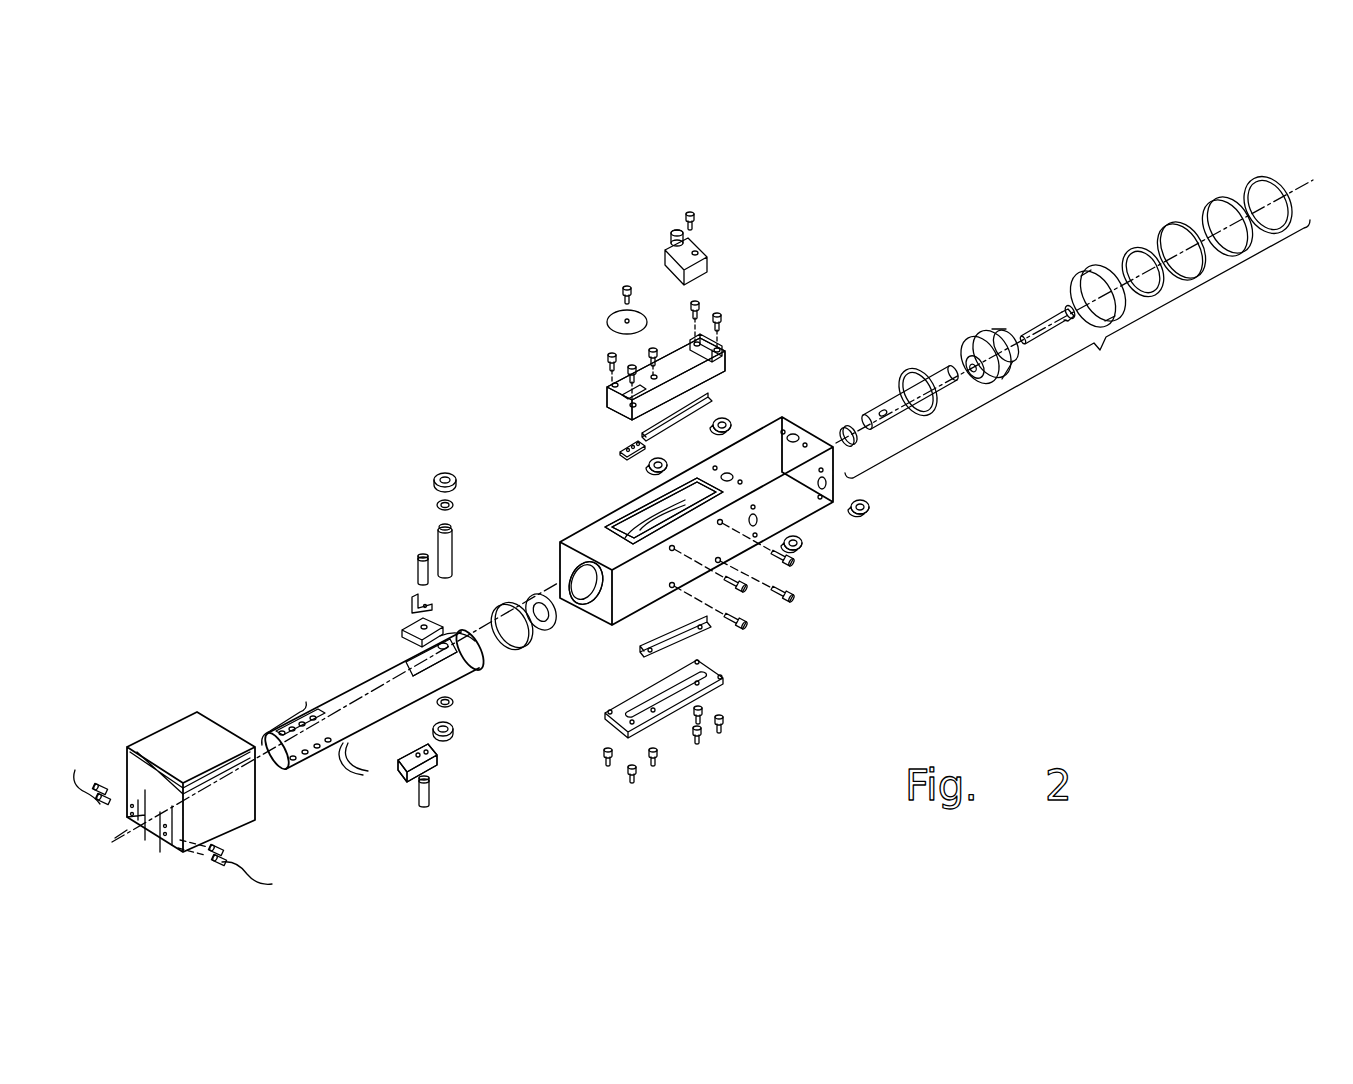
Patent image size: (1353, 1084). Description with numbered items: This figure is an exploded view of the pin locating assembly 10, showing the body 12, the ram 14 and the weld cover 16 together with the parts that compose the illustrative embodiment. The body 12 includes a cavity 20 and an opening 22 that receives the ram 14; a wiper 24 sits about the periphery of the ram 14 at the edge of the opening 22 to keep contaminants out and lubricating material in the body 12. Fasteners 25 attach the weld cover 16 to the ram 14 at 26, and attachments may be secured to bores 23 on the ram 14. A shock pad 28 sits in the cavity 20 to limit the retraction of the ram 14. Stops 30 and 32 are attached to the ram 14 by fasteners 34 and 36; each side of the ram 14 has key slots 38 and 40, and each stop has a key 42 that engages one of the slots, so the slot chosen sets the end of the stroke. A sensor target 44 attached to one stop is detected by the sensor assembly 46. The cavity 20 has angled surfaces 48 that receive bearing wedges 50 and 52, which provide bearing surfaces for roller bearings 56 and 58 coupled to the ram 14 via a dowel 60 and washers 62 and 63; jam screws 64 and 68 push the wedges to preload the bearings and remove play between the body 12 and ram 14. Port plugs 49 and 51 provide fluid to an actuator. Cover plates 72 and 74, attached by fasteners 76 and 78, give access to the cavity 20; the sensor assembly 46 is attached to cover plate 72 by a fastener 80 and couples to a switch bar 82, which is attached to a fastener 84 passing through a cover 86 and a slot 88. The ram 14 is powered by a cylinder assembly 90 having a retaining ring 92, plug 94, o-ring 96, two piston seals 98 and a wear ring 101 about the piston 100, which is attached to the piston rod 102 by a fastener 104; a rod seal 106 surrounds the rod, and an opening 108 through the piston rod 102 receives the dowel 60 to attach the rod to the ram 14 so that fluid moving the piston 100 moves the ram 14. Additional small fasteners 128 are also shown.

The pin locating assembly 10 is at (817, 288).
The body 12 is at (790, 420).
The ram 14 is at (350, 691).
The weld cover 16 is at (170, 740).
The cavity 20 is at (640, 525).
The opening 22 is at (590, 600).
The bores 23 is at (272, 700).
The wiper 24 is at (528, 640).
The fasteners 25 is at (76, 772).
The attachment location 26 is at (368, 776).
The shock pad 28 is at (540, 595).
The stop 30 is at (405, 630).
The stop 32 is at (435, 765).
The fastener 34 is at (420, 562).
The fastener 36 is at (425, 805).
The key slot 38 is at (445, 655).
The key slot 40 is at (440, 665).
The key 42 is at (446, 642).
The sensor target 44 is at (412, 600).
The sensor assembly 46 is at (700, 255).
The angled surfaces 48 is at (660, 510).
The port plug 49 is at (664, 460).
The bearing wedge 50 is at (705, 397).
The port plug 51 is at (728, 420).
The bearing wedge 52 is at (645, 650).
The bearing 56 is at (440, 475).
The bearing 58 is at (453, 734).
The dowel 60 is at (452, 548).
The washer 62 is at (438, 505).
The washer 63 is at (450, 705).
The jam screw 64 is at (653, 350).
The jam screw 68 is at (697, 746).
The cover plate 72 is at (722, 350).
The cover plate 74 is at (610, 713).
The fasteners 76 is at (718, 314).
The fasteners 78 is at (632, 783).
The fastener 80 is at (692, 214).
The switch bar 82 is at (622, 445).
The fastener 84 is at (625, 288).
The cover 86 is at (612, 322).
The slot 88 is at (605, 403).
The cylinder assembly 90 is at (1103, 352).
The retaining ring 92 is at (1268, 177).
The plug 94 is at (1213, 198).
The o-ring 96 is at (1179, 223).
The piston seal 98 is at (912, 368).
The piston 100 is at (990, 330).
The wear ring 101 is at (1093, 264).
The piston rod 102 is at (930, 385).
The fastener 104 is at (1048, 320).
The rod seal 106 is at (845, 428).
The opening 108 is at (883, 410).
The screws 128 is at (718, 618).